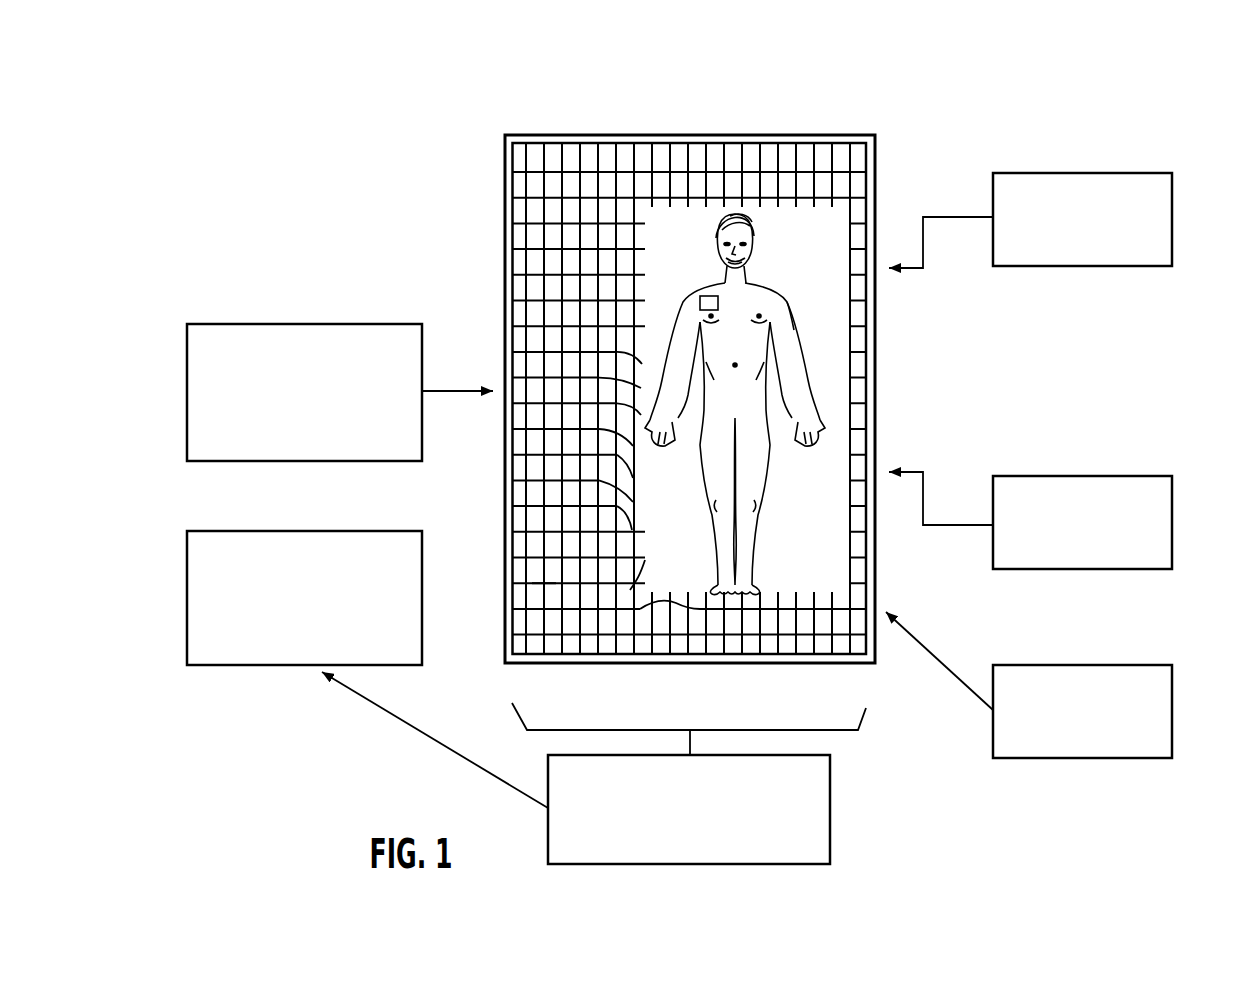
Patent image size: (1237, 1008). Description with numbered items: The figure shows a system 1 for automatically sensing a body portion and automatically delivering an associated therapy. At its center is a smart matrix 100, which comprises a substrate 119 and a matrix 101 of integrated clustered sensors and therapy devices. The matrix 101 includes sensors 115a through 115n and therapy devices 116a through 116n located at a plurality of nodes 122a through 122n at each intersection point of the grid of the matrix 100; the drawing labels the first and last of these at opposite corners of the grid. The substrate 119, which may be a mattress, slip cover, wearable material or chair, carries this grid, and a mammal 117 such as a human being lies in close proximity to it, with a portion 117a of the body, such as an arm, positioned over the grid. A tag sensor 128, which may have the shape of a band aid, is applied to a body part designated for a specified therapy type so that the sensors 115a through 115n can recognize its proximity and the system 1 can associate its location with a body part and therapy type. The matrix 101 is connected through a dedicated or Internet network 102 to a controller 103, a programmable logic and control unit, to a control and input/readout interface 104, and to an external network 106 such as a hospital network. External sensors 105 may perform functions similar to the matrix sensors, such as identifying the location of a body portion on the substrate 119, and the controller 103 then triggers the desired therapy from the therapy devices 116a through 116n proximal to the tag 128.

The system 1 is at (316, 153).
The smart matrix 100 is at (466, 156).
The matrix 101 is at (206, 324).
The network 102 is at (830, 810).
The controller 103 is at (1172, 218).
The interface 104 is at (1172, 522).
The external sensors 105 is at (1172, 705).
The external network 106 is at (203, 665).
The sensor 115a is at (516, 168).
The sensor 115n is at (534, 580).
The therapy device 116a is at (538, 168).
The therapy device 116n is at (556, 597).
The mammal 117 is at (782, 255).
The portion 117a is at (788, 300).
The substrate 119 is at (876, 135).
The node 122a is at (514, 176).
The node 122n is at (534, 589).
The tag sensor 128 is at (700, 296).